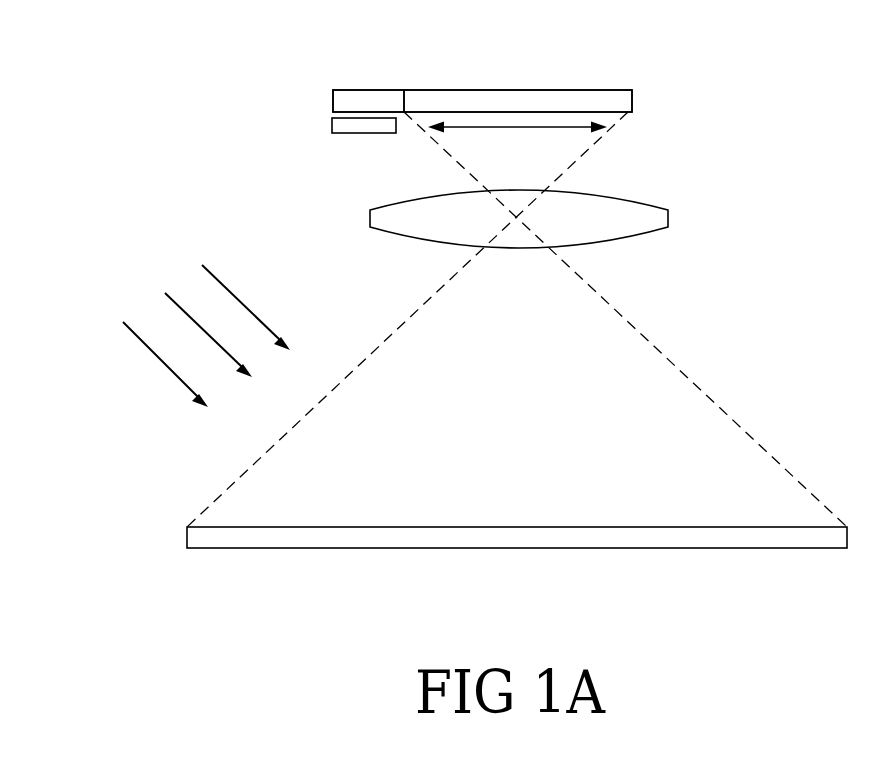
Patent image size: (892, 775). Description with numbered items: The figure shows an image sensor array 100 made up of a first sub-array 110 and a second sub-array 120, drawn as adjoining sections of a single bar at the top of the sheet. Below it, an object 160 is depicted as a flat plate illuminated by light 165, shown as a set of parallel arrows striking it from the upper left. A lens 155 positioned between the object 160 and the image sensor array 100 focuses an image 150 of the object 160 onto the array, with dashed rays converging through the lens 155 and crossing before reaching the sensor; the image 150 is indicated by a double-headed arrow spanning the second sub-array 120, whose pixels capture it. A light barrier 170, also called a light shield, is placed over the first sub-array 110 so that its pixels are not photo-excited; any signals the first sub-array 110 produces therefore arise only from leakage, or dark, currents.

The image sensor array 100 is at (595, 90).
The first sub-array 110 is at (368, 98).
The second sub-array 120 is at (457, 98).
The image 150 is at (572, 128).
The lens 155 is at (668, 218).
The object 160 is at (668, 548).
The light 165 is at (138, 393).
The light barrier 170 is at (355, 133).